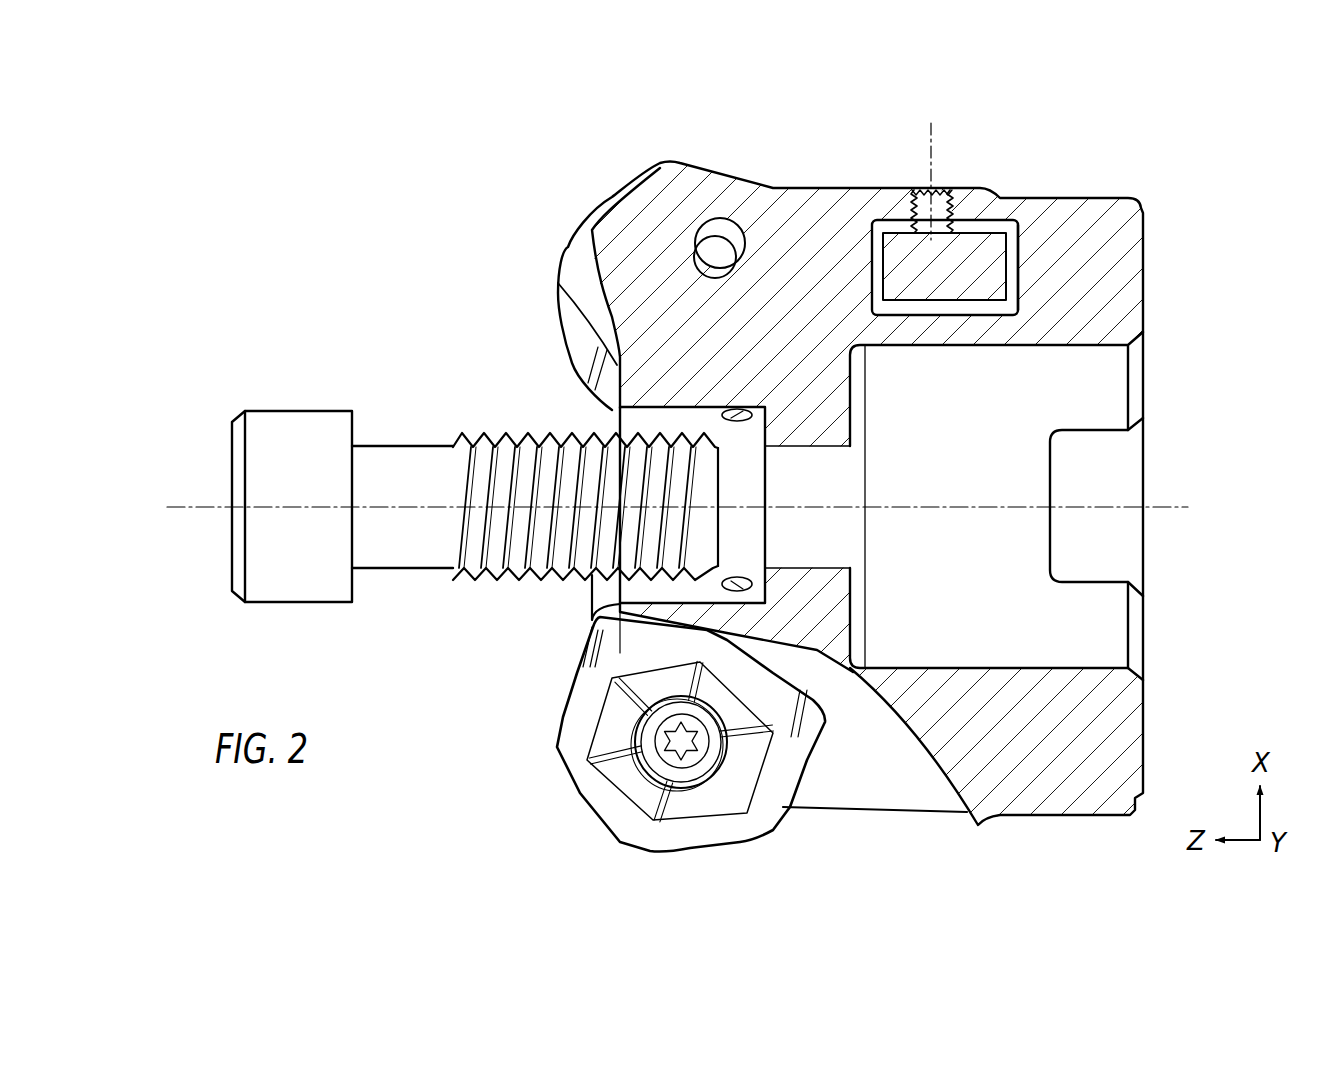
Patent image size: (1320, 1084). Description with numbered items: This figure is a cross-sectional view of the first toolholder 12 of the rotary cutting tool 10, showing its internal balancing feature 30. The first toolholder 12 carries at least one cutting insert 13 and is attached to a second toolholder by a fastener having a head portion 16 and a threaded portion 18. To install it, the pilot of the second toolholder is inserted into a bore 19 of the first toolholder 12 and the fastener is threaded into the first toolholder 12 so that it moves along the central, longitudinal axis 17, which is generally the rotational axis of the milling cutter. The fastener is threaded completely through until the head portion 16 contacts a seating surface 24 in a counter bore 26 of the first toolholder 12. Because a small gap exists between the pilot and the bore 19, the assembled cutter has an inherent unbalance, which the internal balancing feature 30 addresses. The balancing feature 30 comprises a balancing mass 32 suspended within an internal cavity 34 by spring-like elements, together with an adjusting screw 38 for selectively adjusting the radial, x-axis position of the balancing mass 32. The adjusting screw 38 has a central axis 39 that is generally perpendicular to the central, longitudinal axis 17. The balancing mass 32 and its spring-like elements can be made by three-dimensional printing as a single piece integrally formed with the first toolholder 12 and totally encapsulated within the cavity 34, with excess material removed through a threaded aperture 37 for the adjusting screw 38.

The rotary cutting tool 10 is at (176, 457).
The first toolholder 12 is at (1075, 130).
The cutting insert 13 is at (555, 234).
The head portion 16 is at (263, 410).
The central, longitudinal axis 17 is at (1142, 507).
The threaded portion 18 is at (484, 430).
The bore 19 is at (1088, 347).
The seating surface 24 is at (742, 428).
The counter bore 26 is at (612, 417).
The internal balancing feature 30 is at (892, 214).
The balancing mass 32 is at (968, 250).
The internal cavity 34 is at (1013, 228).
The threaded aperture 37 is at (918, 193).
The adjusting screw 38 is at (968, 187).
The central axis 39 is at (929, 142).